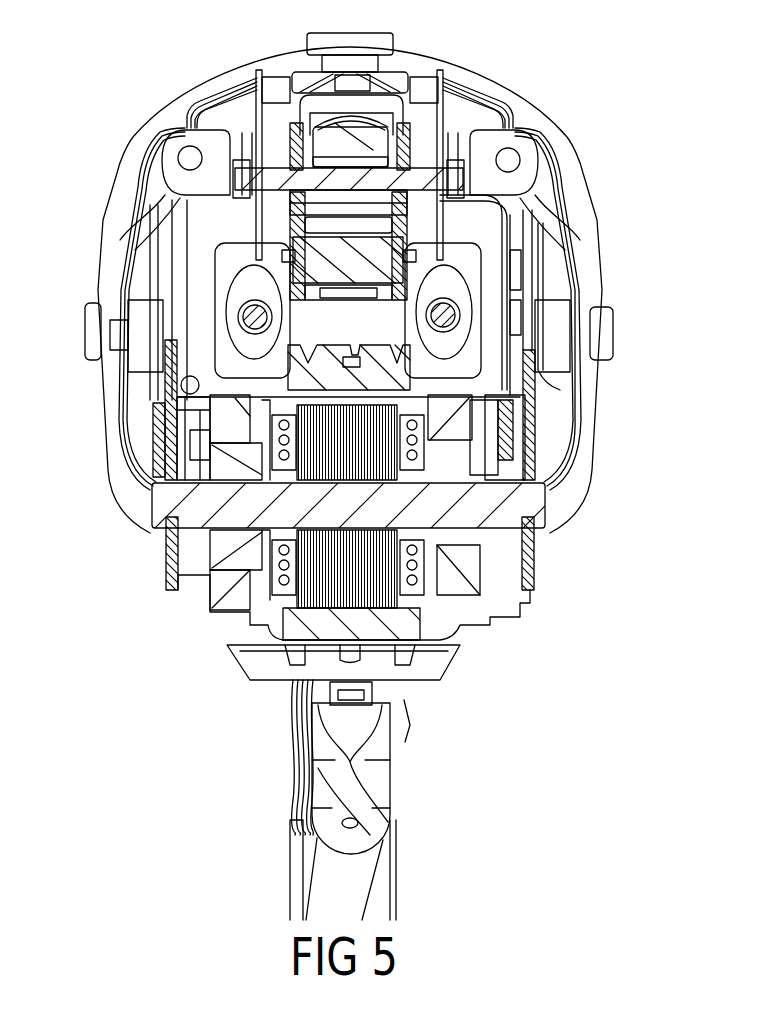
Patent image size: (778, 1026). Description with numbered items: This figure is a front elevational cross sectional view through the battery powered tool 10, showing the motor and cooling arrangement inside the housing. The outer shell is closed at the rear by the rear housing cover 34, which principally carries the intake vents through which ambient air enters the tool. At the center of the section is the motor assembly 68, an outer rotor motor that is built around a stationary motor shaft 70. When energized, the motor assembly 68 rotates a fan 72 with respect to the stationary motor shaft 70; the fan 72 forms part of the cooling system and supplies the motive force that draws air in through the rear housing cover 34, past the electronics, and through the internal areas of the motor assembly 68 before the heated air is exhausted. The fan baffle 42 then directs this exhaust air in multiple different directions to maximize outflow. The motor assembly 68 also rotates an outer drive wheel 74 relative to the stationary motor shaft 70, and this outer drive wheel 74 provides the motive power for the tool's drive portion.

The battery powered tool 10 is at (579, 83).
The rear housing cover 34 is at (137, 141).
The fan baffle 42 is at (490, 397).
The motor assembly 68 is at (385, 640).
The stationary motor shaft 70 is at (550, 497).
The fan 72 is at (470, 418).
The outer drive wheel 74 is at (400, 372).